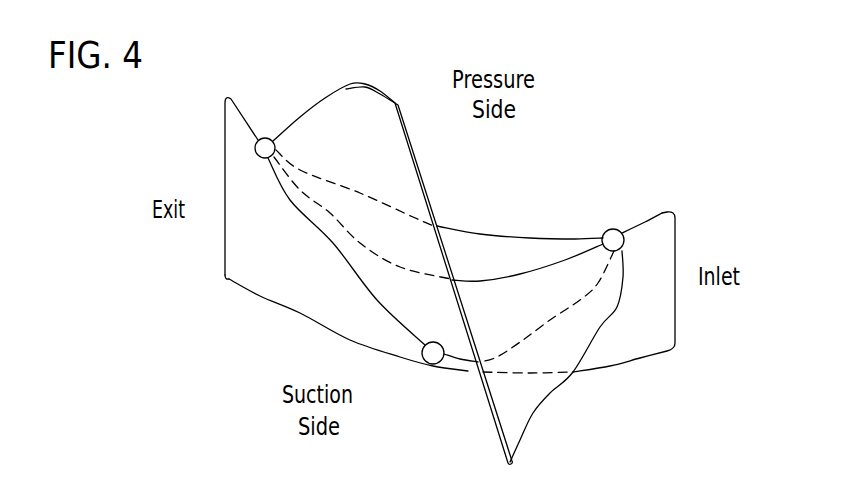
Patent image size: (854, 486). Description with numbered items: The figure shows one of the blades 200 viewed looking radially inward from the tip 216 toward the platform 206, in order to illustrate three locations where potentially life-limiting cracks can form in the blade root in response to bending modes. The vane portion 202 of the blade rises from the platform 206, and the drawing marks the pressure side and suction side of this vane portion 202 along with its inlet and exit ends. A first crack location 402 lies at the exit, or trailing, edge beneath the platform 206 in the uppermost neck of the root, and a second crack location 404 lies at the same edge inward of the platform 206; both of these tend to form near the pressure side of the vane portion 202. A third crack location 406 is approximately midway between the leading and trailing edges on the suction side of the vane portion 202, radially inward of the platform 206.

The blade 200 is at (593, 127).
The vane portion 202 is at (343, 118).
The platform 206 is at (273, 273).
The tip 216 is at (425, 187).
The first crack location 402 is at (257, 150).
The second crack location 404 is at (612, 229).
The third crack location 406 is at (433, 364).